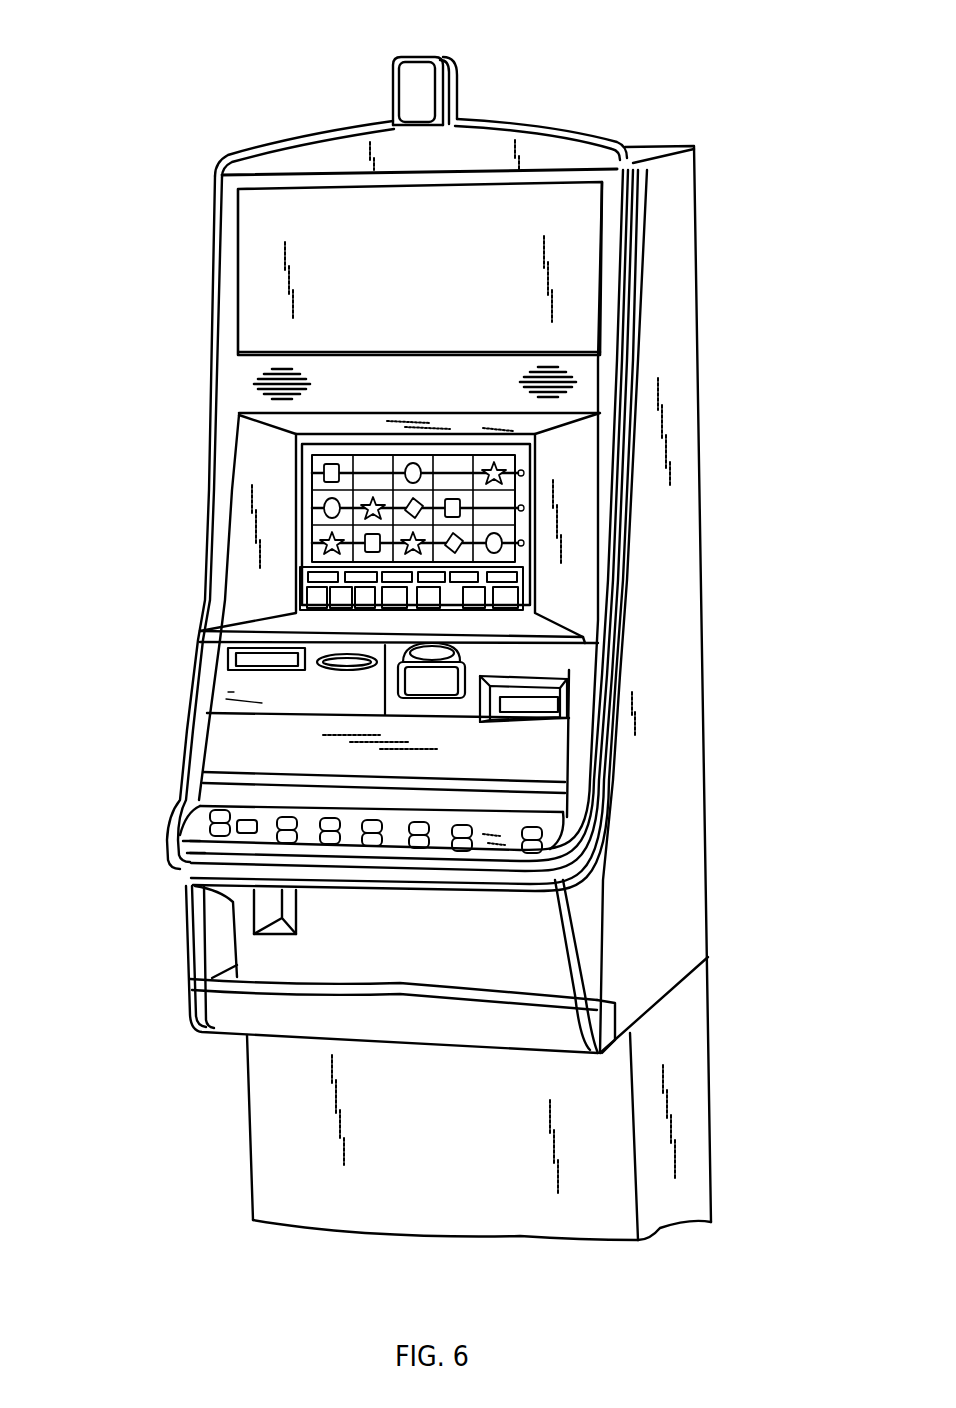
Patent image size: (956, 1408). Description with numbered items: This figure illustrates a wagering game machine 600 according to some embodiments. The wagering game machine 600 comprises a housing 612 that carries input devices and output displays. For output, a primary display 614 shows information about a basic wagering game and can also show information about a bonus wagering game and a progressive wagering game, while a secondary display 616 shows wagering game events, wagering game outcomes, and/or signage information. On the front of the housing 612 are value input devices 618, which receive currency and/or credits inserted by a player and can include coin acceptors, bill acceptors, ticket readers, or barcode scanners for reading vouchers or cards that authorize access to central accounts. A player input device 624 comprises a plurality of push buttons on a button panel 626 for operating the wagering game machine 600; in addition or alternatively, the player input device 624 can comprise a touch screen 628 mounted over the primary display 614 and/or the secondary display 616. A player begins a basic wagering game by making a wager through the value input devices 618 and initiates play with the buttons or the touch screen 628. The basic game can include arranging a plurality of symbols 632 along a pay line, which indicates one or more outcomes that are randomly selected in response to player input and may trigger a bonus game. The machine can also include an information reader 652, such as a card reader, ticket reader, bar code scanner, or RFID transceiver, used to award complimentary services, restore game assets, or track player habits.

The wagering game machine 600 is at (183, 18).
The housing 612 is at (685, 228).
The primary display 614 is at (287, 533).
The secondary display 616 is at (287, 265).
The value input devices 618 is at (465, 658).
The player input device 624 is at (547, 828).
The button panel 626 is at (270, 835).
The touch screen 628 is at (530, 578).
The symbols 632 is at (308, 470).
The information reader 652 is at (328, 673).